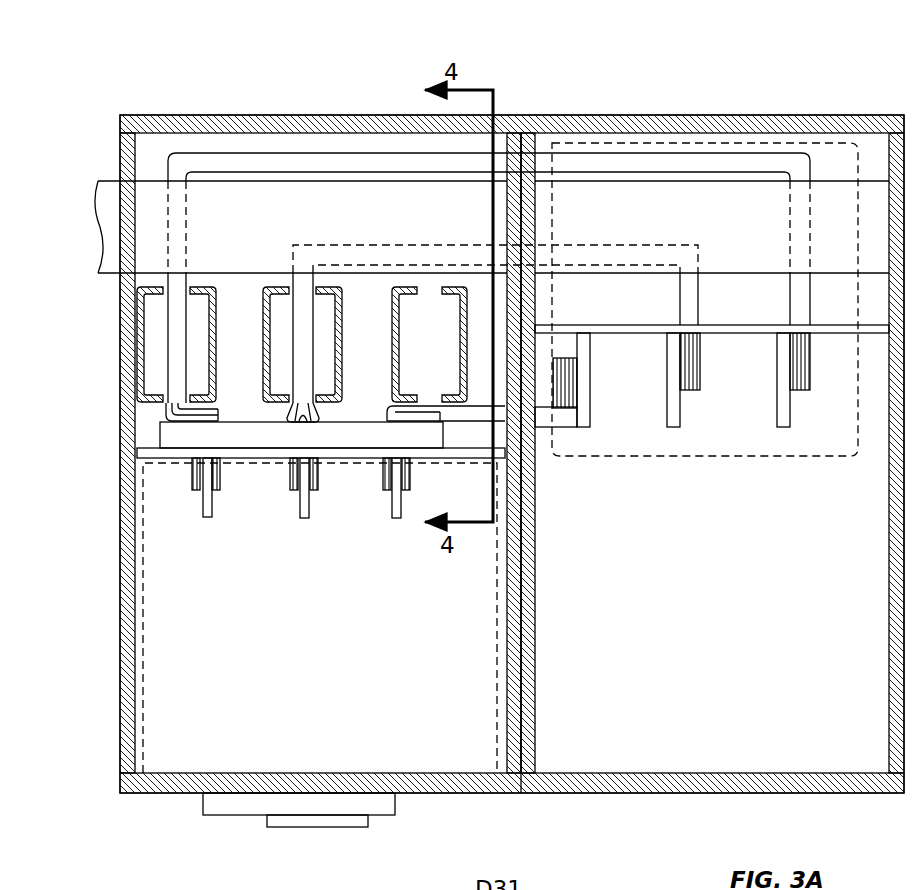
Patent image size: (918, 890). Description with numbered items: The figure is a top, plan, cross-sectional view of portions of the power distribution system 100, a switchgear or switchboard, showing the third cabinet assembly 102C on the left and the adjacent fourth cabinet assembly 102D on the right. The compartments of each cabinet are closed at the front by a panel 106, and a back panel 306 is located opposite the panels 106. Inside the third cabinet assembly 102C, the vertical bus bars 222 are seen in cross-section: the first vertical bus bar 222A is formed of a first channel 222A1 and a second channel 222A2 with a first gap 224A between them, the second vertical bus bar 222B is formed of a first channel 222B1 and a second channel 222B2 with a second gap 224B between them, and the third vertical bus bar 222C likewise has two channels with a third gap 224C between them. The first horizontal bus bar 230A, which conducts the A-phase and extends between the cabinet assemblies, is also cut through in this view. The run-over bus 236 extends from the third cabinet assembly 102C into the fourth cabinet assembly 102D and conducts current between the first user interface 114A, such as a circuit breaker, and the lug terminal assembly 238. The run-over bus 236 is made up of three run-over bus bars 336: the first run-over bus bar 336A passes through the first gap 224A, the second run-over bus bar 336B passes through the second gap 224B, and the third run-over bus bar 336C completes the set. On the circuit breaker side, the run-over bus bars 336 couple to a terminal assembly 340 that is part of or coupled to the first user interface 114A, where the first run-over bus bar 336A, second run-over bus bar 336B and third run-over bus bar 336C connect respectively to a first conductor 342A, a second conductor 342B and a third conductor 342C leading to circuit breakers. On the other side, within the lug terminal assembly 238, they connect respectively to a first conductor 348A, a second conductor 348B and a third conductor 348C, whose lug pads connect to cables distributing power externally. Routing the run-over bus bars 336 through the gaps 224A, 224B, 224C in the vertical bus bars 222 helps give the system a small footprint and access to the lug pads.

The power distribution system 100 is at (570, 60).
The third cabinet assembly 102C is at (195, 105).
The fourth cabinet assembly 102D is at (815, 108).
The panel 106 is at (170, 795).
The first user interface 114A is at (140, 630).
The vertical bus bars 222 is at (249, 374).
The first vertical bus bar 222A is at (117, 351).
The first channel 222A1 is at (136, 305).
The second channel 222A2 is at (195, 382).
The second vertical bus bar 222B is at (282, 374).
The first channel 222B1 is at (278, 287).
The second channel 222B2 is at (325, 287).
The third vertical bus bar 222C is at (478, 390).
The first gap 224A is at (150, 418).
The second gap 224B is at (283, 282).
The third gap 224C is at (428, 282).
The first horizontal bus bar 230A is at (97, 190).
The run-over bus 236 is at (560, 138).
The lug terminal assembly 238 is at (684, 457).
The back panel 306 is at (672, 114).
The run-over bus bars 336 is at (270, 145).
The first run-over bus bar 336A is at (290, 150).
The second run-over bus bar 336B is at (408, 245).
The third run-over bus bar 336C is at (543, 428).
The terminal assembly 340 is at (160, 438).
The first conductor 342A is at (213, 518).
The second conductor 342B is at (304, 520).
The third conductor 342C is at (396, 520).
The first conductor 348A is at (622, 388).
The second conductor 348B is at (682, 410).
The third conductor 348C is at (784, 428).